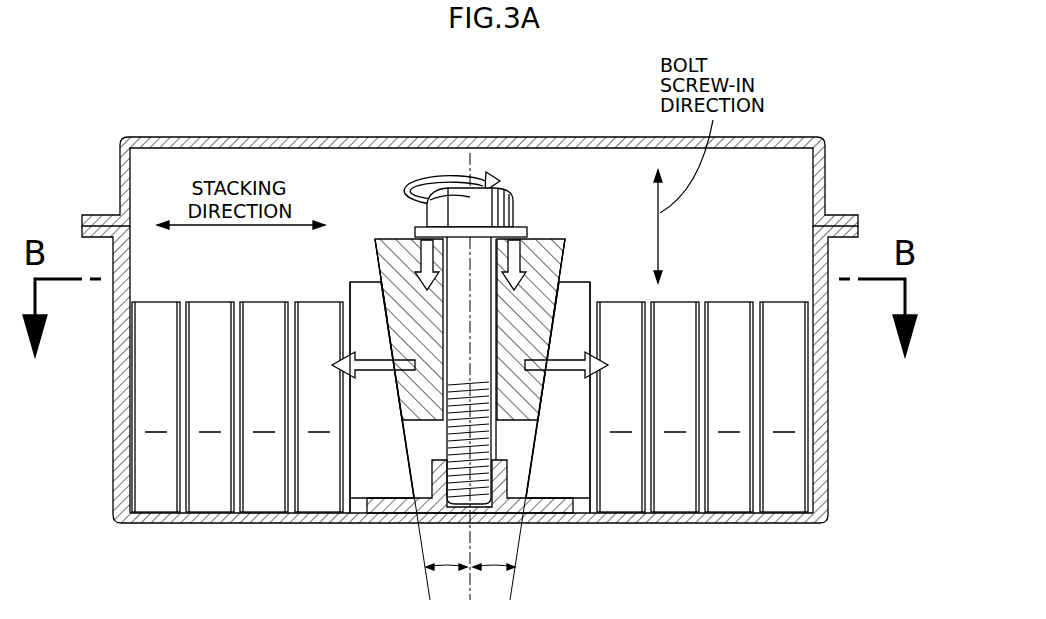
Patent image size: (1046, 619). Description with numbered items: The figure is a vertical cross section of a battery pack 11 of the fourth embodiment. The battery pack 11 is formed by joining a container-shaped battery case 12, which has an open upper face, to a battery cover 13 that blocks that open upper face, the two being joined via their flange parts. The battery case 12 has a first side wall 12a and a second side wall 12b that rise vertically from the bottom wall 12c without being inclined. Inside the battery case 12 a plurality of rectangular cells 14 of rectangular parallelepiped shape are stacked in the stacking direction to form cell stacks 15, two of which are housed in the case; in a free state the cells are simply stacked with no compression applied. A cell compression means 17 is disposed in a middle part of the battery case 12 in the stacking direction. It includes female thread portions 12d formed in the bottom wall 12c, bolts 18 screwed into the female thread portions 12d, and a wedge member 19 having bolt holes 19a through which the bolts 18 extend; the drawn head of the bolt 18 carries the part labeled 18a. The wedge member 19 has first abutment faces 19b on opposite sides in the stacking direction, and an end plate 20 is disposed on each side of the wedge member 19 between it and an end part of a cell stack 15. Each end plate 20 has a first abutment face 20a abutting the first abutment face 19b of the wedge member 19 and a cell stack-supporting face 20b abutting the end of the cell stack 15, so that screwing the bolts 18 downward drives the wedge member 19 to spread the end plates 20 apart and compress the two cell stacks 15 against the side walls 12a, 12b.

The battery pack 11 is at (316, 113).
The battery case 12 is at (110, 373).
The first side wall 12a is at (112, 460).
The second side wall 12b is at (832, 398).
The bottom wall 12c is at (237, 523).
The female thread portion 12d is at (447, 512).
The battery cover 13 is at (237, 137).
The rectangular cell 14 is at (470, 407).
The cell stack 15 is at (170, 280).
The cell compression means 17 is at (422, 166).
The bolt 18 is at (515, 212).
The bolt head flange 18a is at (505, 208).
The wedge member 19 is at (393, 238).
The bolt hole 19a is at (448, 342).
The first abutment face 19b is at (380, 315).
The end plate 20 is at (347, 462).
The first abutment face 20a is at (415, 425).
The cell stack-supporting face 20b is at (350, 335).